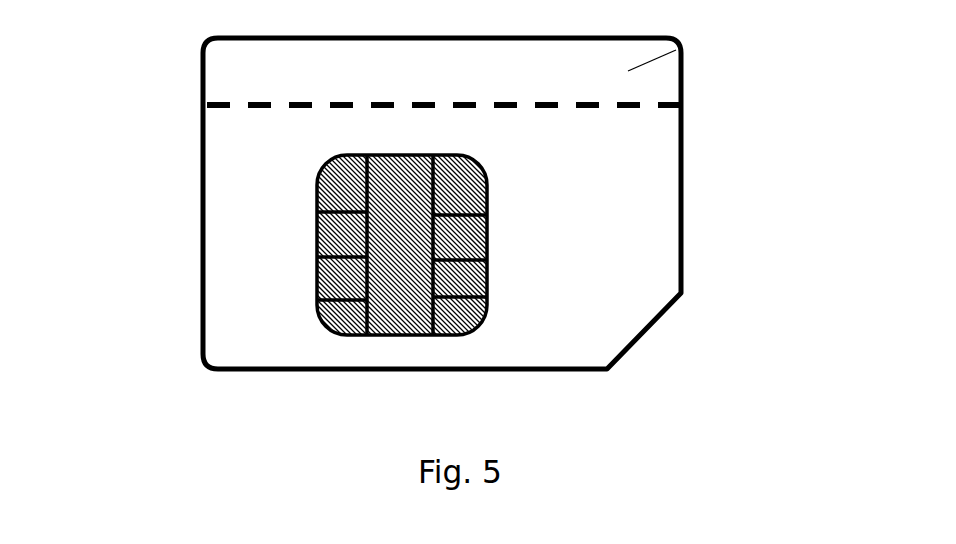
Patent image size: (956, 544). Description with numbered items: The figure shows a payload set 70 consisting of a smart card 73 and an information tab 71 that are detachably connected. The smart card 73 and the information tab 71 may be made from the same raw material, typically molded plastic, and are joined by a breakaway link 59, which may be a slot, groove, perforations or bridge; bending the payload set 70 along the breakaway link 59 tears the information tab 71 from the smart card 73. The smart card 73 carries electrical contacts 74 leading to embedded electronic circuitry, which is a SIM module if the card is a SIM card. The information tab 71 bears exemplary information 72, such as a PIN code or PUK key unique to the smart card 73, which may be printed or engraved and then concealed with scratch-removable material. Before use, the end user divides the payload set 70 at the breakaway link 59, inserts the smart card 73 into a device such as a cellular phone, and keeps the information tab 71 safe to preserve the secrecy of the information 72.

The payload set 70 is at (668, 348).
The information tab 71 is at (676, 50).
The exemplary information 72 is at (323, 75).
The smart card 73 is at (225, 177).
The electrical contacts 74 is at (317, 272).
The breakaway link 59 is at (590, 107).